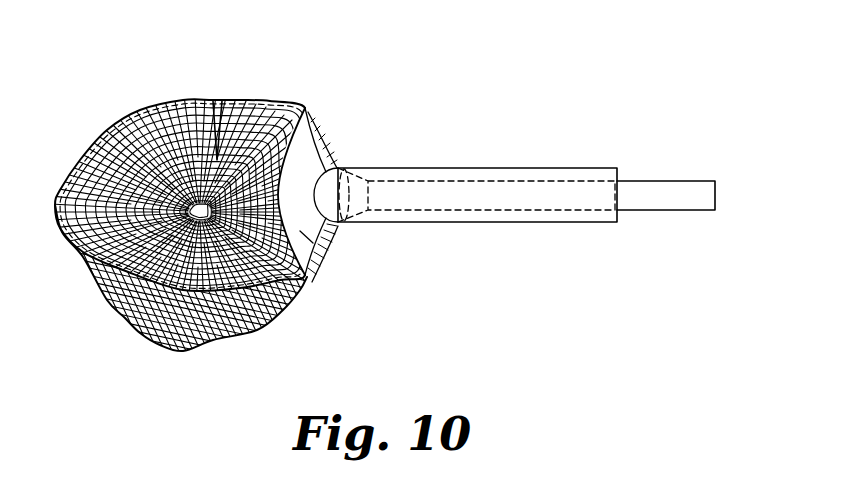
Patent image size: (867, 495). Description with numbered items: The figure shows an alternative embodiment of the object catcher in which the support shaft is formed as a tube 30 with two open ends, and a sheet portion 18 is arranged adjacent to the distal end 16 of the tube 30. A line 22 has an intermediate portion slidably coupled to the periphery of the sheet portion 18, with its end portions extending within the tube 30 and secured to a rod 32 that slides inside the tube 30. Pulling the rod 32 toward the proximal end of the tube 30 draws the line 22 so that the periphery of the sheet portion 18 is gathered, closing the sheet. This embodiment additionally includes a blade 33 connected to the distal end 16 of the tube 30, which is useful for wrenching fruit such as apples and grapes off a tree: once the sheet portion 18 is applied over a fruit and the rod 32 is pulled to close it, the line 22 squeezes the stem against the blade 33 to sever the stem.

The distal end 16 is at (333, 172).
The sheet portion 18 is at (115, 313).
The line 22 is at (245, 104).
The tube 30 is at (583, 168).
The rod 32 is at (672, 212).
The blade 33 is at (322, 270).